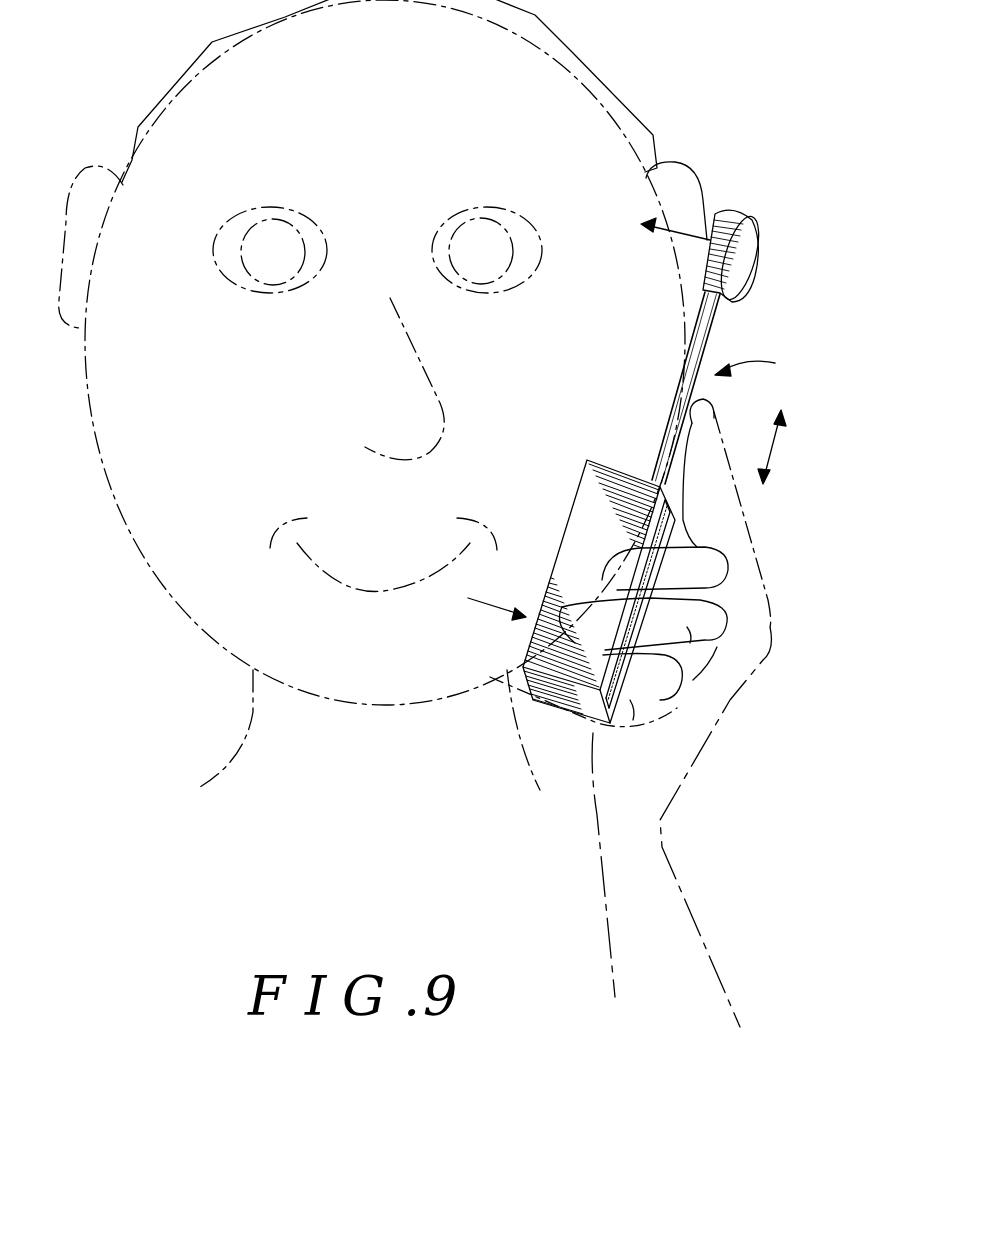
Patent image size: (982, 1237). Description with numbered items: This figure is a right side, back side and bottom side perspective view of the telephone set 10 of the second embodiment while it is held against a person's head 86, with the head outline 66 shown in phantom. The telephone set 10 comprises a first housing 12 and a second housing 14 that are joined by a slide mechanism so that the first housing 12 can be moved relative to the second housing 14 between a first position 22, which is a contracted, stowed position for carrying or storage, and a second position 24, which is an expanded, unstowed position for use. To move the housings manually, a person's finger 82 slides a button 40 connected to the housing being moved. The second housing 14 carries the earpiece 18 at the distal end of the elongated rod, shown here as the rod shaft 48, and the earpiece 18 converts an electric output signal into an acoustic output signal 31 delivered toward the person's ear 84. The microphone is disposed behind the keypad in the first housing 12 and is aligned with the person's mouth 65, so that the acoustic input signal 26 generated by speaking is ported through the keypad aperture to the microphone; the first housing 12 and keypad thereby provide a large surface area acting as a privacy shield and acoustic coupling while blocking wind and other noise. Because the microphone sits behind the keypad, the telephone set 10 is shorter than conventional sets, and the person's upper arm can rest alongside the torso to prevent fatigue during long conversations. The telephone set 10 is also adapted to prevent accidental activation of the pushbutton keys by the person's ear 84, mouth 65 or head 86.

The telephone set 10 is at (787, 879).
The first housing 12 is at (527, 655).
The second housing 14 is at (783, 368).
The earpiece 18 is at (757, 243).
The first position 22 is at (800, 487).
The second position 24 is at (813, 442).
The acoustic input signal 26 is at (468, 598).
The acoustic output signal 31 is at (663, 237).
The button 40 is at (666, 532).
The antenna shaft 48 is at (720, 325).
The person's mouth 65 is at (343, 585).
The user's head 66 is at (167, 578).
The person's finger 82 is at (710, 420).
The person's ear 84 is at (677, 177).
The person's head 86 is at (560, 88).